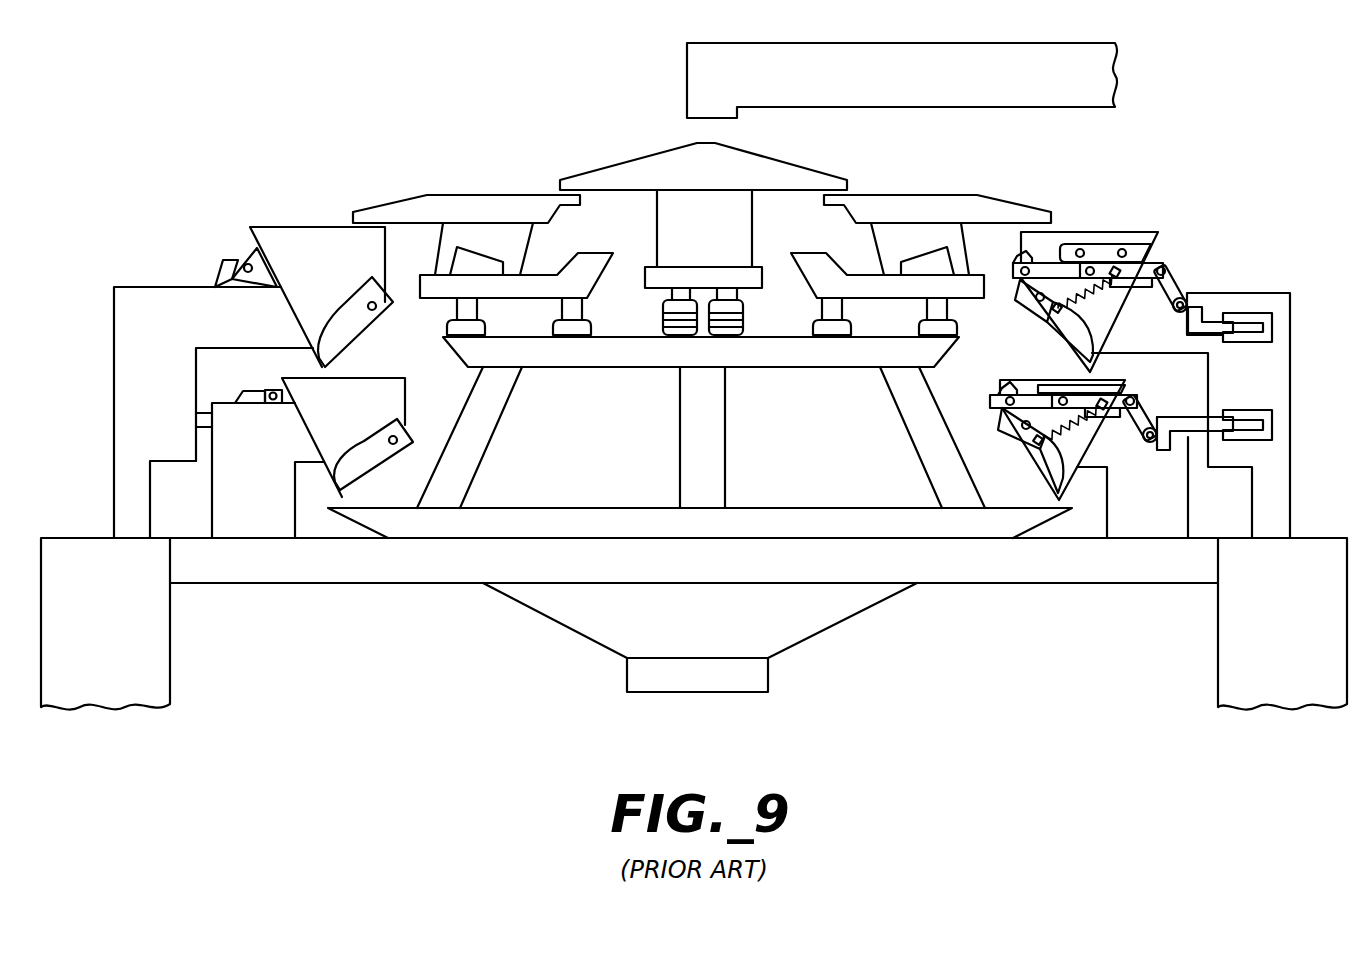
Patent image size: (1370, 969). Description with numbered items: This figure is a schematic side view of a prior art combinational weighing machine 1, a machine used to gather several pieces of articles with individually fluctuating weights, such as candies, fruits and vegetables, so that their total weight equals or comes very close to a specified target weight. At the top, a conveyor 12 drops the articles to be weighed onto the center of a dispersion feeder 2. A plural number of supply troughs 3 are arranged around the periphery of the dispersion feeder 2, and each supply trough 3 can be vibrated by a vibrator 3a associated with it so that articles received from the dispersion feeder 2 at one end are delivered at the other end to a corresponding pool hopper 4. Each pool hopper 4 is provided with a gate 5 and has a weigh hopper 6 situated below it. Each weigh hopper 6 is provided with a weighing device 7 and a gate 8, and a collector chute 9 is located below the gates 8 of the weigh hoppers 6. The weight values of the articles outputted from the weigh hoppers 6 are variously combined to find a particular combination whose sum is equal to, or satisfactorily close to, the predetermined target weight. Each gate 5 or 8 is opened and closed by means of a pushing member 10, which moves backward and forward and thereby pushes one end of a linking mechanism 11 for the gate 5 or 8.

The combinational weighing machine 1 is at (1170, 165).
The dispersion feeder 2 is at (657, 152).
The supply trough 3 is at (448, 193).
The vibrator 3a is at (520, 248).
The pool hopper 4 is at (293, 227).
The gate 5 is at (352, 323).
The weigh hopper 6 is at (387, 377).
The weighing device 7 is at (218, 507).
The gate 8 is at (362, 463).
The collector chute 9 is at (565, 622).
The pushing member 10 is at (1237, 317).
The linking mechanism 11 is at (1175, 275).
The conveyor 12 is at (773, 43).